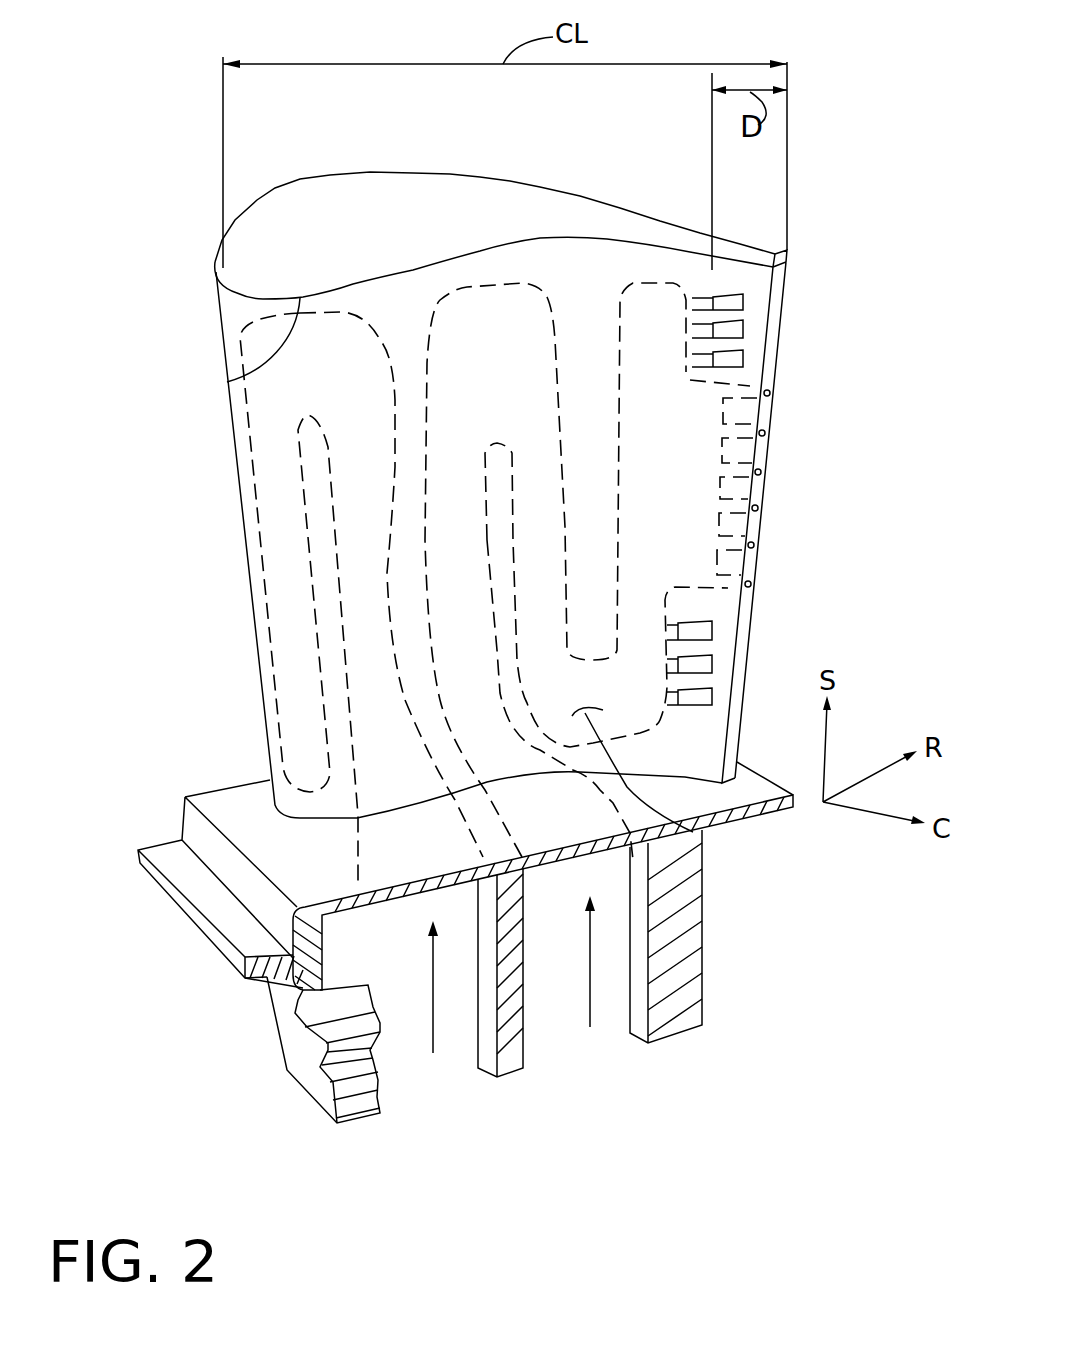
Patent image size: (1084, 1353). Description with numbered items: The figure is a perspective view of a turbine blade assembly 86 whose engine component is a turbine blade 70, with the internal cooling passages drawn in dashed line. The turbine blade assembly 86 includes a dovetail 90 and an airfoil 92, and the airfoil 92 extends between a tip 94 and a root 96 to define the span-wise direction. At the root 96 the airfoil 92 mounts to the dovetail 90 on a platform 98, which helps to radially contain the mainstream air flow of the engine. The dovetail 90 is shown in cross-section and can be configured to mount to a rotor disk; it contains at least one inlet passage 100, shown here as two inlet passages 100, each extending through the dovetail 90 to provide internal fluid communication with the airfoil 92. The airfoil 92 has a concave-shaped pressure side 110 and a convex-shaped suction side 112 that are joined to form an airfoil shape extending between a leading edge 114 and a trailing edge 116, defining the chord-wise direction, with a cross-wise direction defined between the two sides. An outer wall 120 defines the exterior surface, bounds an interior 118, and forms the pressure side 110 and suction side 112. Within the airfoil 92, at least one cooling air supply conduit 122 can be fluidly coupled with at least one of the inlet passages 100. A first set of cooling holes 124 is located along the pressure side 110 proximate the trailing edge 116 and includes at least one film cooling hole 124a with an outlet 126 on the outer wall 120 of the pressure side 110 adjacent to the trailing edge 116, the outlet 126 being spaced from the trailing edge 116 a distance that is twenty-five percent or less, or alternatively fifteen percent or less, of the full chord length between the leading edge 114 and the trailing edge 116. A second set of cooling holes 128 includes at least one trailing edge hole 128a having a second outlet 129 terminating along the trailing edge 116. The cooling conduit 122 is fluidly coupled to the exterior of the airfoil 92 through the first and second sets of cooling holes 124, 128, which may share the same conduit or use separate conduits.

The turbine blade 70 is at (242, 505).
The turbine blade assembly 86 is at (861, 134).
The dovetail 90 is at (300, 1035).
The airfoil 92 is at (340, 160).
The tip 94 is at (273, 220).
The root 96 is at (685, 776).
The platform 98 is at (237, 795).
The inlet passage 100 is at (463, 1097).
The pressure side 110 is at (247, 373).
The suction side 112 is at (522, 172).
The leading edge 114 is at (225, 288).
The trailing edge 116 is at (788, 268).
The interior 118 is at (730, 613).
The outer wall 120 is at (693, 830).
The cooling air supply conduit 122 is at (640, 283).
The first set of cooling holes 124 is at (790, 297).
The film cooling hole 124a is at (730, 363).
The outlet 126 is at (727, 307).
The second set of cooling holes 128 is at (816, 382).
The trailing edge hole 128a is at (732, 588).
The second outlet 129 is at (753, 543).